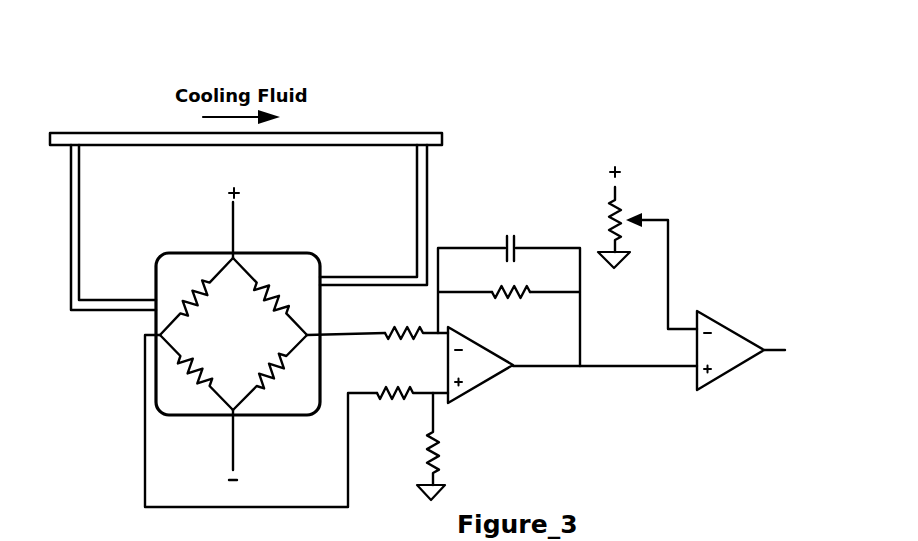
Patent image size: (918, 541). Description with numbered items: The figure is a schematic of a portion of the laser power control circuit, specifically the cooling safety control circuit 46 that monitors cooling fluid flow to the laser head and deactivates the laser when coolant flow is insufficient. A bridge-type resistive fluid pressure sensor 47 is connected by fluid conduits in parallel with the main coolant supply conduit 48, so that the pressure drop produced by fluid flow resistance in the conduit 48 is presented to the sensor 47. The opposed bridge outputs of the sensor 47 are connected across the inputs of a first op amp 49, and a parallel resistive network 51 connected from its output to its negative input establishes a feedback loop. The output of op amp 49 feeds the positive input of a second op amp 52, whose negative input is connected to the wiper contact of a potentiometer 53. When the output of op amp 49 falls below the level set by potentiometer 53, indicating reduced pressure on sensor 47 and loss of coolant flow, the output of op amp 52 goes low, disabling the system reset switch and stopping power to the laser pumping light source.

The control circuit 46 is at (472, 208).
The bridge-type resistive fluid pressure sensor 47 is at (153, 317).
The main coolant supply conduit 48 is at (147, 133).
The op amp 49 is at (483, 375).
The parallel resistive network 51 is at (518, 272).
The op amp 52 is at (738, 352).
The potentiometer 53 is at (622, 202).